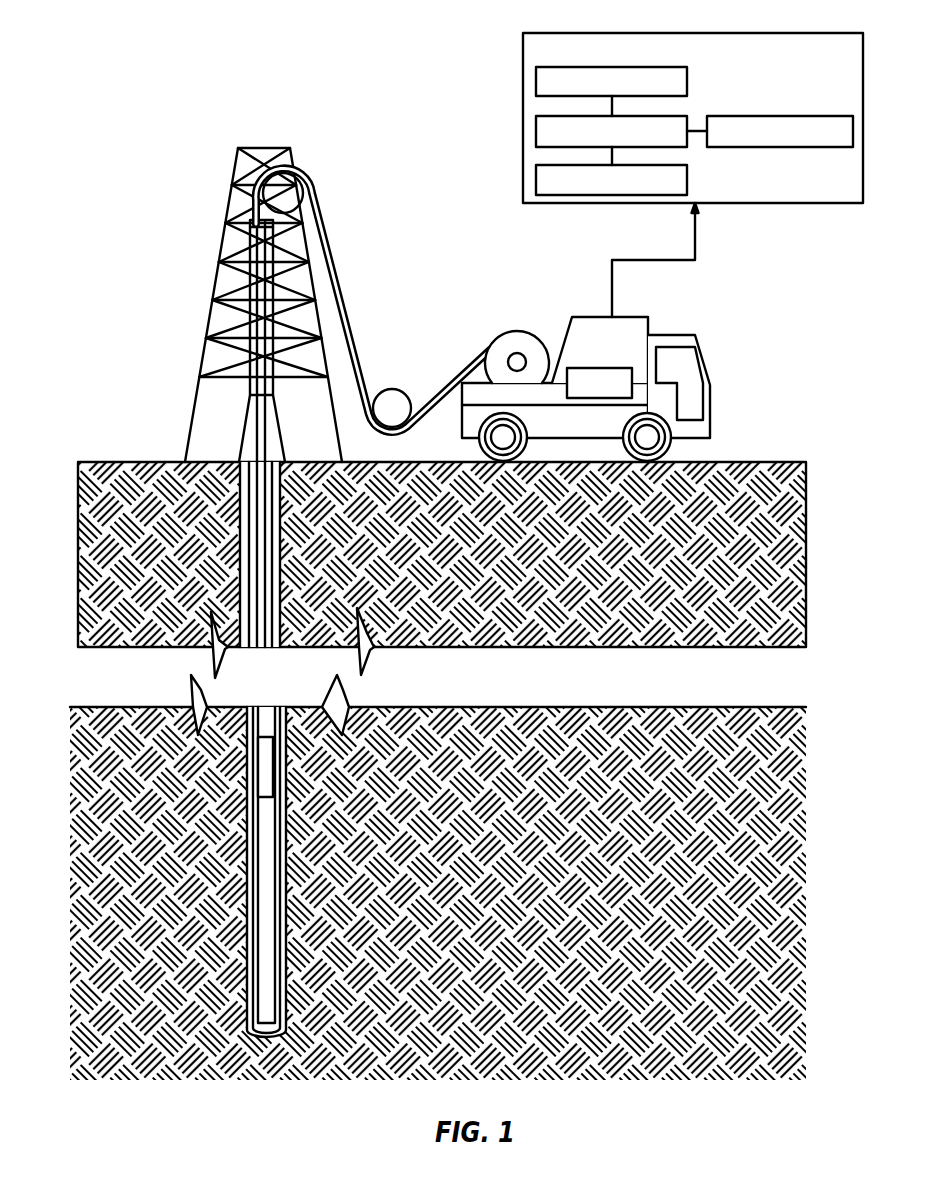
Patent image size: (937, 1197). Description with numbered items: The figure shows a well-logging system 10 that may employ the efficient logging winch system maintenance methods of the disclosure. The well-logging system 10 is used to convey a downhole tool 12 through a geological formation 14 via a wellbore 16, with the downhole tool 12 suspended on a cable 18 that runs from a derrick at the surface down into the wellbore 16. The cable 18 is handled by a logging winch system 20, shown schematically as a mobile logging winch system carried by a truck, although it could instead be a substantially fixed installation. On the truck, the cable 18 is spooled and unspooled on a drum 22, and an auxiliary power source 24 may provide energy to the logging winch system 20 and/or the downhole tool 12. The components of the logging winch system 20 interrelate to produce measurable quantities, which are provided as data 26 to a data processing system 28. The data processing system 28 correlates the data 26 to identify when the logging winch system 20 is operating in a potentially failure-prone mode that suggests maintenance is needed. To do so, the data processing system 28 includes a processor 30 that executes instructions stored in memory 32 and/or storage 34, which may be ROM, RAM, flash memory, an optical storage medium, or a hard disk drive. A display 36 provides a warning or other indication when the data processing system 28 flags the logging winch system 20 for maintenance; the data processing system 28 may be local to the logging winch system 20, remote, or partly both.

The well-logging system 10 is at (117, 185).
The downhole tool 12 is at (256, 751).
The geological formation 14 is at (83, 810).
The wellbore 16 is at (233, 514).
The cable 18 is at (349, 294).
The logging winch system 20 is at (586, 350).
The drum 22 is at (518, 331).
The auxiliary power source 24 is at (601, 371).
The data 26 is at (697, 232).
The data processing system 28 is at (670, 107).
The processor 30 is at (667, 116).
The memory 32 is at (536, 80).
The storage 34 is at (684, 182).
The display 36 is at (782, 116).